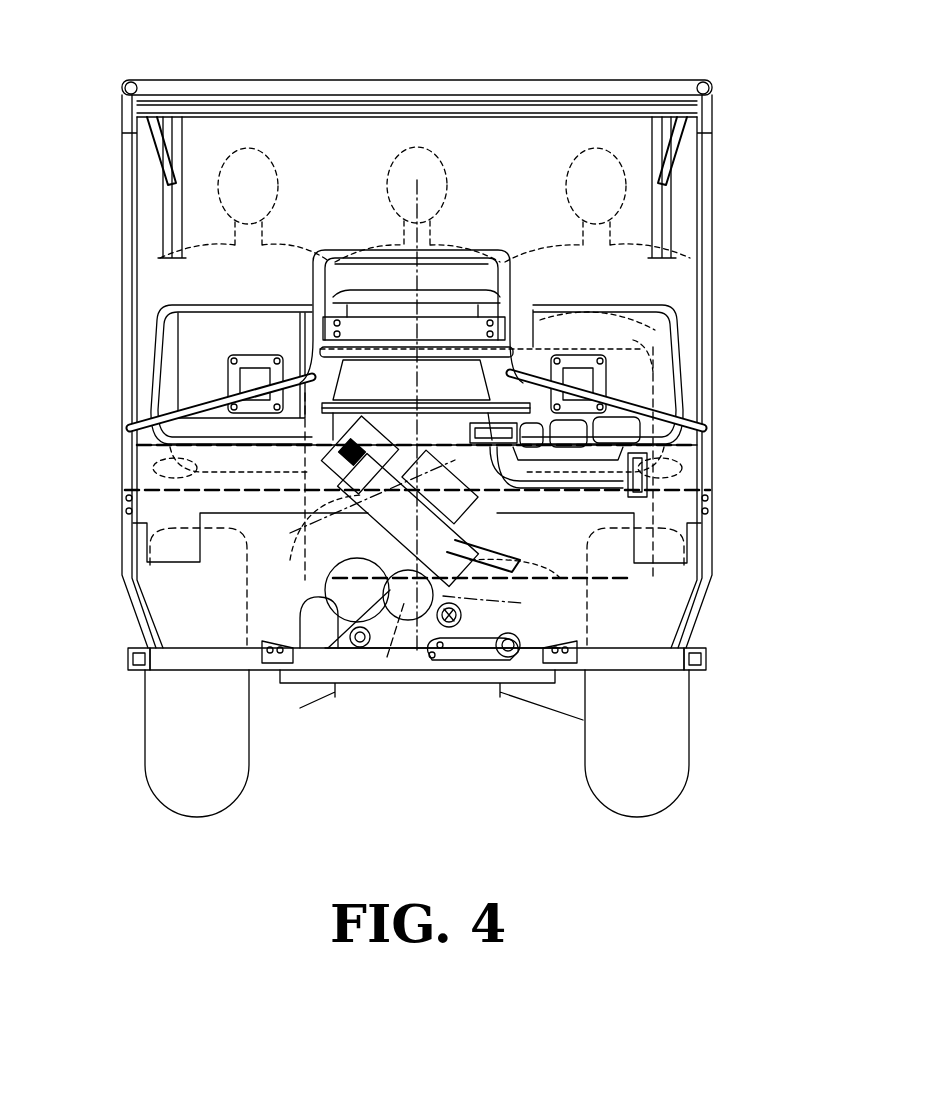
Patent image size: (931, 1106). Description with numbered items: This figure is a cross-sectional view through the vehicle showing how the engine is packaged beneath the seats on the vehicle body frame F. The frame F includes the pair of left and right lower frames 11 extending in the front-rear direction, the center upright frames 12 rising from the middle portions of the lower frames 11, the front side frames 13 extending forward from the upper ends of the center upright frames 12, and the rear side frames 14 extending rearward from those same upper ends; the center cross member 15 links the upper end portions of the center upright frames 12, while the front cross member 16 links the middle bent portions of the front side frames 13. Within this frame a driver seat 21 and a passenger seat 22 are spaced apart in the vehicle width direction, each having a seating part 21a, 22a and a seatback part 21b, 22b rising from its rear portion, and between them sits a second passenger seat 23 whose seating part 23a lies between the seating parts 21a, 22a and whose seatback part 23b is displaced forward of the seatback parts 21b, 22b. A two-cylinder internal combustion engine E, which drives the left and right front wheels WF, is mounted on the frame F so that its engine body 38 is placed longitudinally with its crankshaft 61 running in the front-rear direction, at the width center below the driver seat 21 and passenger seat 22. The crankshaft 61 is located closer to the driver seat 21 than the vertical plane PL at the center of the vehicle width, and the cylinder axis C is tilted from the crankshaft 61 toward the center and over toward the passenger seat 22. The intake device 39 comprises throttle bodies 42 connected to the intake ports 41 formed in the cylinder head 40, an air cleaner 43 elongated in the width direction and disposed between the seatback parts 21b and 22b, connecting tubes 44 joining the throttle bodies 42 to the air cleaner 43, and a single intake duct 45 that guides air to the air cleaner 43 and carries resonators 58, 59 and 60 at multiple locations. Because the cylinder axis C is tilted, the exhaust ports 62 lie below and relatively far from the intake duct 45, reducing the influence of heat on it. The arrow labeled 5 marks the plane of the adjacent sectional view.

The storage portion 5 is at (668, 365).
The lower frames 11 is at (135, 670).
The center upright frames 12 is at (126, 240).
The front side frames 13 is at (172, 150).
The rear side frames 14 is at (124, 88).
The center cross member 15 is at (433, 88).
The front cross member 16 is at (357, 104).
The driver seat 21 is at (176, 367).
The seating part 21a is at (175, 468).
The seatback part 21b is at (240, 320).
The passenger seat 22 is at (661, 322).
The seating part 22a is at (640, 470).
The seatback part 22b is at (630, 275).
The second passenger seat 23 is at (414, 314).
The seating part 23a is at (458, 440).
The seatback part 23b is at (380, 268).
The engine body 38 is at (405, 645).
The intake device 39 is at (585, 505).
The cylinder head 40 is at (556, 492).
The intake ports 41 is at (398, 440).
The throttle bodies 42 is at (340, 500).
The air cleaner 43 is at (512, 374).
The connecting tubes 44 is at (345, 428).
The intake duct 45 is at (700, 502).
The resonator 58 is at (530, 430).
The resonator 59 is at (568, 430).
The resonator 60 is at (640, 395).
The crankshaft 61 is at (387, 657).
The exhaust ports 62 is at (506, 558).
The cylinder axis C is at (333, 565).
The internal combustion engine E is at (414, 550).
The vehicle body frame F is at (128, 650).
The vertical plane PL is at (501, 606).
The front wheels WF is at (165, 773).